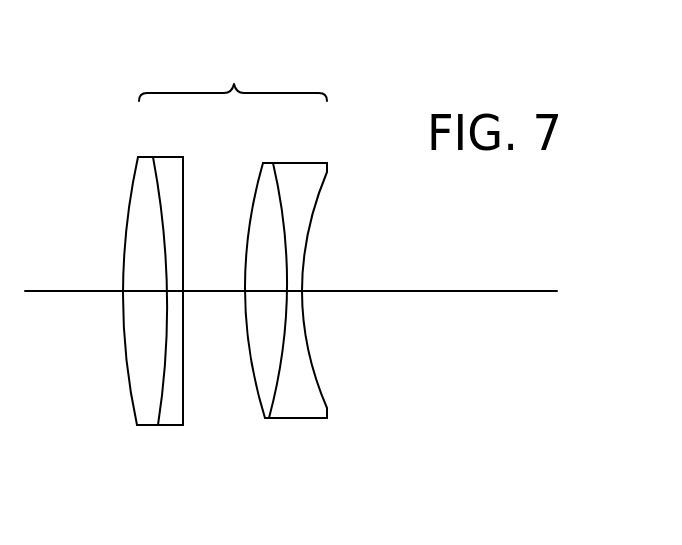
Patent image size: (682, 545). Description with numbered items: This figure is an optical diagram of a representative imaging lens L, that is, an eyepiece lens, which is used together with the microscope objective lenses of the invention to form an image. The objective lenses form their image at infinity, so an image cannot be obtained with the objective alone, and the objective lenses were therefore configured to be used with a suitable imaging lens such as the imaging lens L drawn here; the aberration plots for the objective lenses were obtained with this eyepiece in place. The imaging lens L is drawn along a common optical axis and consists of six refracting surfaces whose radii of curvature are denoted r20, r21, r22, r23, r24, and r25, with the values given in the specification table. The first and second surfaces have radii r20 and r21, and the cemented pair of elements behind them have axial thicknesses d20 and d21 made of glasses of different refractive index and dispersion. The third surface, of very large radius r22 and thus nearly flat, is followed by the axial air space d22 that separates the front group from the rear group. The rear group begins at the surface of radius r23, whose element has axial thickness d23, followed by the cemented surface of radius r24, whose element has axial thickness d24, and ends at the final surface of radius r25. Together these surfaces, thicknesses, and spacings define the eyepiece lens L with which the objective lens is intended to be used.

The imaging lens L is at (233, 75).
The radius of curvature of surface 20 r20 is at (127, 328).
The radius of curvature of surface 21 r21 is at (152, 417).
The radius of curvature of surface 22 r22 is at (186, 358).
The radius of curvature of surface 23 r23 is at (262, 412).
The radius of curvature of surface 24 r24 is at (282, 380).
The radius of curvature of surface 25 r25 is at (322, 392).
The axial distance after surface 20 d20 is at (137, 292).
The axial distance after surface 21 d21 is at (175, 292).
The axial distance after surface 22 d22 is at (205, 292).
The axial distance after surface 23 d23 is at (269, 418).
The axial distance after surface 24 d24 is at (297, 292).